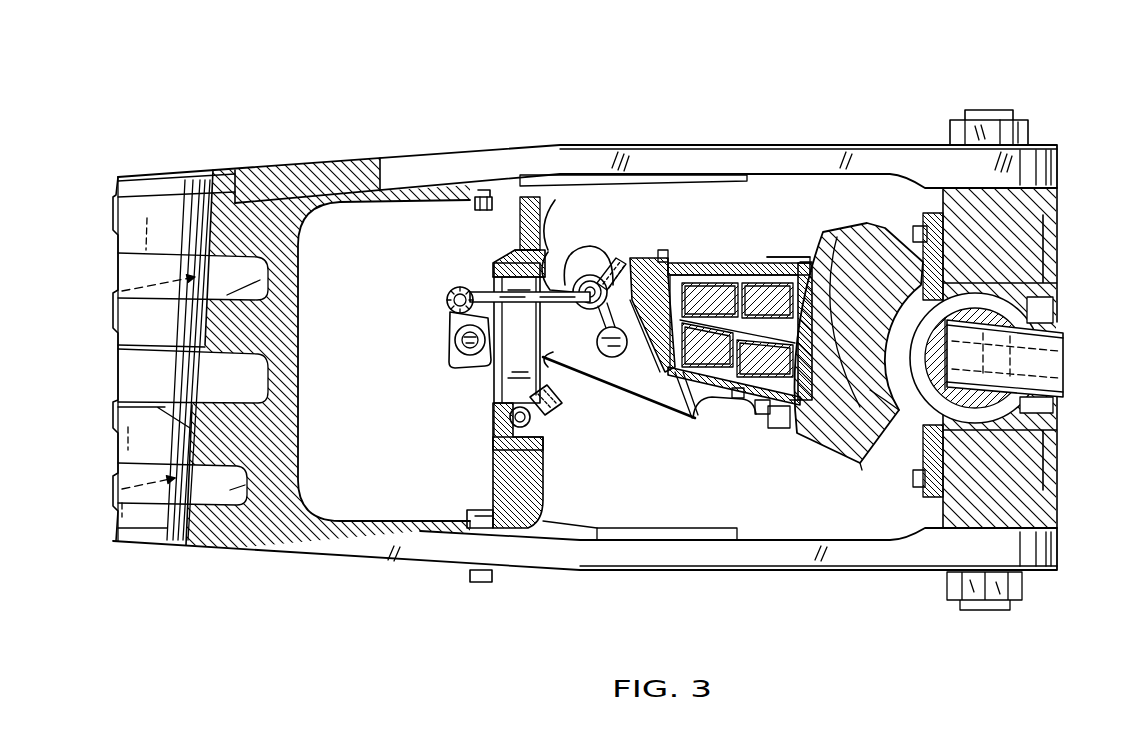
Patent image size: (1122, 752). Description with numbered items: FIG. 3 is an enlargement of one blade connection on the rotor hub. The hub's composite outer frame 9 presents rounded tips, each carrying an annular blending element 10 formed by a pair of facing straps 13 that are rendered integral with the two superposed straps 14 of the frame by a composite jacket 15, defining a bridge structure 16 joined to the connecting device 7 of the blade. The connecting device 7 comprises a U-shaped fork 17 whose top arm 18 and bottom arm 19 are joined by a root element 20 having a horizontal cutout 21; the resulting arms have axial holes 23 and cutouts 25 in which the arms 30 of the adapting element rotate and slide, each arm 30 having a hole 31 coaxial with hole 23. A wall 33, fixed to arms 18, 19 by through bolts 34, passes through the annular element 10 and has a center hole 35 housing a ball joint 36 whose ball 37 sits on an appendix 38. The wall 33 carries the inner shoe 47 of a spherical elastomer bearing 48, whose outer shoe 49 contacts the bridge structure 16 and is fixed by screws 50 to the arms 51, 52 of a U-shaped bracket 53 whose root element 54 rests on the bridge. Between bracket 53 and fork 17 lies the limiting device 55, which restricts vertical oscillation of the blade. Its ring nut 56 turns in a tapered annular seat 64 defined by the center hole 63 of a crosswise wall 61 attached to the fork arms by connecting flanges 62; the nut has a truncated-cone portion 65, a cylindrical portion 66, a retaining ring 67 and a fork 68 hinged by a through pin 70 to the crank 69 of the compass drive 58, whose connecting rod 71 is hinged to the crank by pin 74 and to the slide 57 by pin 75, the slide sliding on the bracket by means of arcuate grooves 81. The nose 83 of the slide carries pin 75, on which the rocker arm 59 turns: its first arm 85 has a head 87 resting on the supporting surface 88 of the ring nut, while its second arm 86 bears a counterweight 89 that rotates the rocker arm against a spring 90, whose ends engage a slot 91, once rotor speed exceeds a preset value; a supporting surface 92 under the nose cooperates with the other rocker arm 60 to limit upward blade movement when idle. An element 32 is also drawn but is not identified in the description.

The connecting device 7 is at (538, 572).
The outer frame 9 is at (747, 258).
The annular blending element 10 is at (735, 388).
The strap 13 is at (812, 270).
The strap 14 is at (722, 292).
The composite material jacket 15 is at (693, 420).
The bridge structure 16 is at (712, 398).
The fork 17 is at (417, 570).
The top arm 18 is at (740, 165).
The bottom arm 19 is at (915, 550).
The root element 20 is at (296, 349).
The cutout 21 is at (262, 373).
The through axial hole 23 is at (182, 412).
The cutout 25 is at (258, 283).
The arm 30 is at (140, 262).
The hole 31 is at (118, 293).
The groove 32 is at (172, 428).
The wall 33 is at (1048, 213).
The through bolt 34 is at (977, 117).
The center hole 35 is at (1038, 293).
The ball joint 36 is at (1042, 324).
The ball 37 is at (998, 433).
The appendix 38 is at (1068, 362).
The inner shoe 47 is at (875, 428).
The spherical elastomer bearing 48 is at (880, 470).
The outer shoe 49 is at (872, 232).
The screw 50 is at (802, 262).
The arm 51 is at (790, 263).
The arm 52 is at (705, 370).
The U-shaped bracket 53 is at (708, 263).
The root element 54 is at (680, 258).
The limiting device 55 is at (413, 423).
The ring nut 56 is at (487, 423).
The slide 57 is at (628, 400).
The compass drive 58 is at (438, 296).
The rocker arm 59 is at (603, 275).
The rocker arm 60 is at (550, 408).
The crosswise wall 61 is at (540, 500).
The connecting flange 62 is at (490, 200).
The center through hole 63 is at (498, 442).
The tapered annular seat 64 is at (533, 456).
The truncated-cone portion 65 is at (522, 251).
The cylindrical portion 66 is at (520, 262).
The retaining ring 67 is at (505, 264).
The fork 68 is at (488, 360).
The crank 69 is at (455, 333).
The through pin 70 is at (458, 350).
The connecting rod 71 is at (517, 333).
The through pin 74 is at (447, 305).
The through pin 75 is at (630, 290).
The inner groove 81 is at (760, 290).
The nose 83 is at (548, 258).
The first arm 85 is at (563, 298).
The second arm 86 is at (641, 378).
The head 87 is at (584, 283).
The supporting surface 88 is at (520, 296).
The counterweight 89 is at (605, 360).
The spring 90 is at (667, 250).
The slot 91 is at (633, 248).
The supporting surface 92 is at (555, 355).